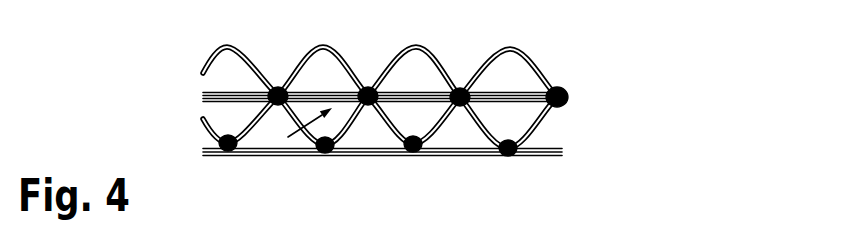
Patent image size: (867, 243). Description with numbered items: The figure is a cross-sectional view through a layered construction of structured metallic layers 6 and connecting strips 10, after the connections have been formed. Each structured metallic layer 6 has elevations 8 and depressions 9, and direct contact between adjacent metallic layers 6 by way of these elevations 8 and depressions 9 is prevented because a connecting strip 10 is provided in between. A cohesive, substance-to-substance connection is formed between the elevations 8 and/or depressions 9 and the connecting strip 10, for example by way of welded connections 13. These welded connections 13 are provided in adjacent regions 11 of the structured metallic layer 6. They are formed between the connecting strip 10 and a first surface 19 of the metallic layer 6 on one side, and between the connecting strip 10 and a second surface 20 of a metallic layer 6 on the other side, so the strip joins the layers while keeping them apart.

The metallic layer 6 is at (502, 50).
The elevation 8 is at (366, 104).
The depression 9 is at (365, 82).
The connecting strip 10 is at (202, 145).
The adjacent region 11 is at (288, 137).
The welded connection 13 is at (272, 78).
The first surface 19 is at (535, 138).
The second surface 20 is at (530, 137).